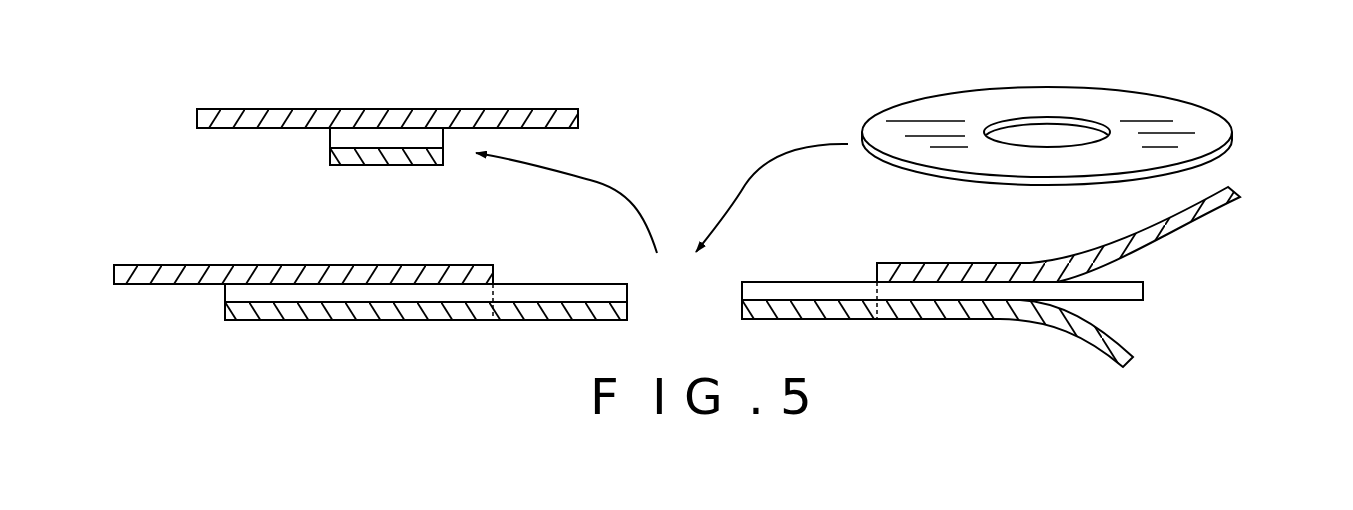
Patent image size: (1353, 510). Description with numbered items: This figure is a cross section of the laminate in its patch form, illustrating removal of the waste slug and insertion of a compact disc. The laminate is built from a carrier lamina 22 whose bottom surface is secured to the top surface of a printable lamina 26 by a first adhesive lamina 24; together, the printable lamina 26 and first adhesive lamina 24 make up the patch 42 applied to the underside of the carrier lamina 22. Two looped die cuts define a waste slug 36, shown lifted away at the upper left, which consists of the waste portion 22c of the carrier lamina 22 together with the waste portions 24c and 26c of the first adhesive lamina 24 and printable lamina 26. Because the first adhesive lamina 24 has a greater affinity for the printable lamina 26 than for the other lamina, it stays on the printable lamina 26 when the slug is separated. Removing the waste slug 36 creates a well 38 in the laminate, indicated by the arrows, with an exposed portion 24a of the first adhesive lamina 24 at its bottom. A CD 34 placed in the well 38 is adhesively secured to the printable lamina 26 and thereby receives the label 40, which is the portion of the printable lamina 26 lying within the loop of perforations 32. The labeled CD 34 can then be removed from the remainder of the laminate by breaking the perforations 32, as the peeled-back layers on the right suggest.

The carrier lamina 22 is at (1236, 190).
The waste portion of the carrier lamina 22c is at (548, 109).
The first adhesive lamina 24 is at (1133, 288).
The exposed portion of the first adhesive lamina 24a is at (552, 278).
The waste portion of the first adhesive lamina 24c is at (343, 136).
The printable lamina 26 is at (1125, 366).
The waste portion of the printable lamina 26c is at (442, 154).
The perforations 32 is at (495, 326).
The CD 34 is at (1173, 120).
The waste slug 36 is at (176, 117).
The well 38 is at (638, 258).
The label 40 is at (560, 320).
The patch 42 is at (216, 285).